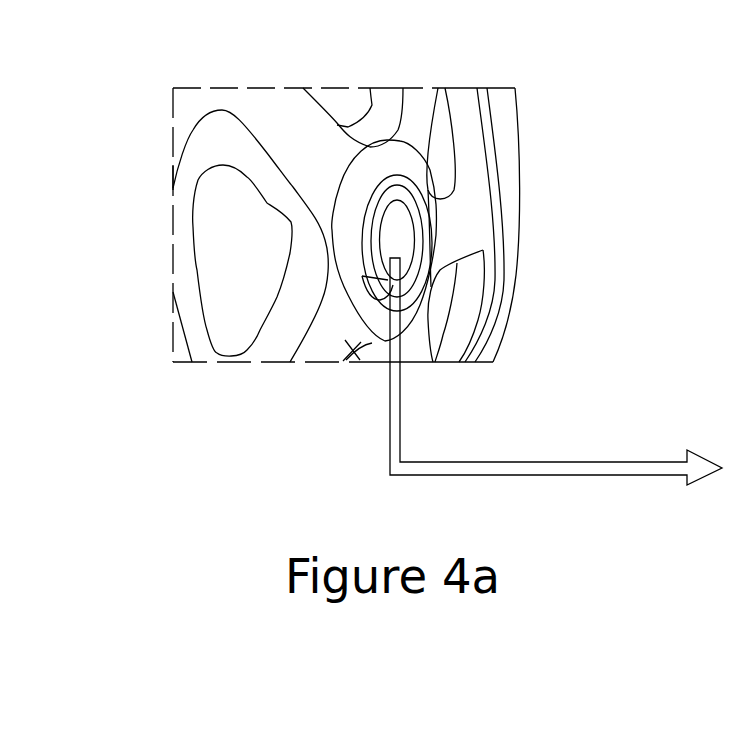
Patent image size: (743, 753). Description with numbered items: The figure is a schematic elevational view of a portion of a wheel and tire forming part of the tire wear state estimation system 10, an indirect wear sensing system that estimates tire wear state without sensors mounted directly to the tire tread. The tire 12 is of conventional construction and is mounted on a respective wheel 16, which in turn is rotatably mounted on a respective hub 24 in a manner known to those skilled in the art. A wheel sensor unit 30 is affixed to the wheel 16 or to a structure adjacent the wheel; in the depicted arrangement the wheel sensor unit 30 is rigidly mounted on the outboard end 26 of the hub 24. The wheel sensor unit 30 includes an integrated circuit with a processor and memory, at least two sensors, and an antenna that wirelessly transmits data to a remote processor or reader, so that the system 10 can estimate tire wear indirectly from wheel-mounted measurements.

The tire wear state estimation system 10 is at (247, 415).
The tire 12 is at (515, 288).
The wheel 16 is at (380, 103).
The hub 24 is at (380, 193).
The outboard end 26 is at (384, 197).
The wheel sensor unit 30 is at (404, 223).